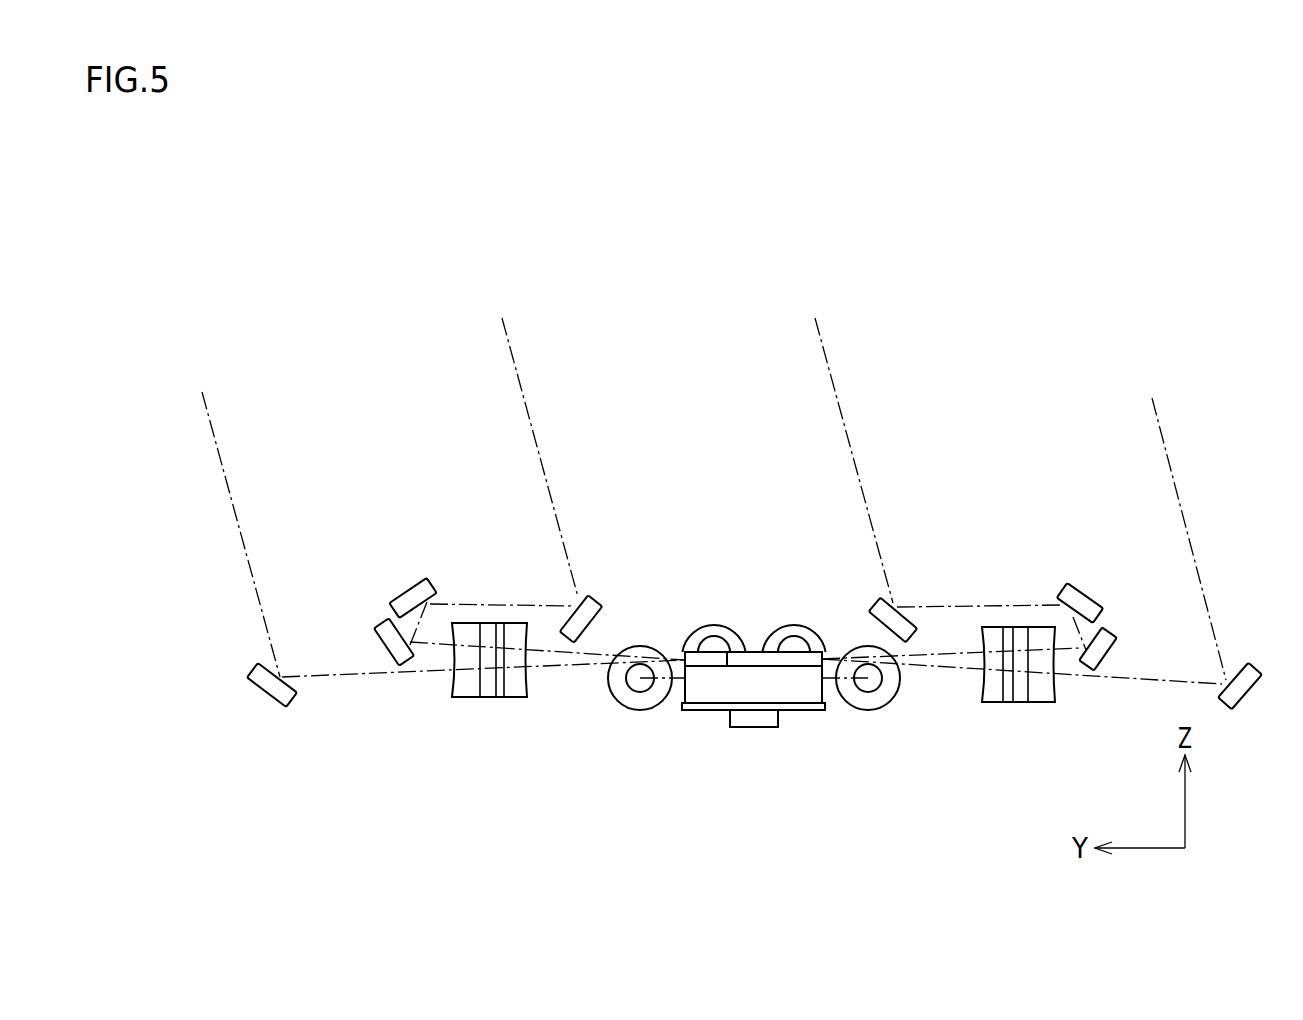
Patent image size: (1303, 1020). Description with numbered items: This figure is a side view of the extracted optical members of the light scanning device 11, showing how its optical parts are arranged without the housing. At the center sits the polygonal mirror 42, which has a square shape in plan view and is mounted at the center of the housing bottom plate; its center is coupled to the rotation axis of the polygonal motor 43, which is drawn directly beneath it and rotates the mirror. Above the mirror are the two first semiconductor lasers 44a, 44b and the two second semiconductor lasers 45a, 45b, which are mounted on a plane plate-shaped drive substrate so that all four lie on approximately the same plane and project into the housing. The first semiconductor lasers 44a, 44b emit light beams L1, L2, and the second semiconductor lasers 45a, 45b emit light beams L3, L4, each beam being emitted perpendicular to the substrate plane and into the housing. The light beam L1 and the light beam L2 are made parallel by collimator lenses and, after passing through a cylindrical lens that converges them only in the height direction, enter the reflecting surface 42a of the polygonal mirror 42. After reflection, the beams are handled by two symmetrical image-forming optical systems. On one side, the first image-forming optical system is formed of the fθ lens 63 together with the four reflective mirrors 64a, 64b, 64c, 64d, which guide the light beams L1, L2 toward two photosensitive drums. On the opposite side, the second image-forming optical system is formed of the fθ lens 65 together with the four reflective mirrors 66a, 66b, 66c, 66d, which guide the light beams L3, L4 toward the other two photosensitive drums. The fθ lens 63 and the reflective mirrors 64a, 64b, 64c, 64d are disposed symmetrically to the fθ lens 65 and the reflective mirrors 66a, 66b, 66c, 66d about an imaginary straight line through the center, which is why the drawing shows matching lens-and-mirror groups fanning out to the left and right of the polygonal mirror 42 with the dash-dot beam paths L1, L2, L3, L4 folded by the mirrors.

The light scanning device 11 is at (669, 300).
The polygonal mirror 42 is at (710, 662).
The reflecting surface 42a is at (755, 655).
The polygonal motor 43 is at (797, 688).
The first semiconductor laser 44a is at (793, 622).
The first semiconductor laser 44b is at (862, 646).
The second semiconductor laser 45a is at (638, 646).
The second semiconductor laser 45b is at (715, 622).
The fθ lens 63 is at (1042, 695).
The reflective mirror 64a is at (1254, 668).
The reflective mirror 64b is at (1113, 653).
The reflective mirror 64c is at (1085, 600).
The reflective mirror 64d is at (907, 624).
The fθ lens 65 is at (516, 697).
The reflective mirror 66a is at (265, 692).
The reflective mirror 66b is at (384, 647).
The reflective mirror 66c is at (405, 596).
The reflective mirror 66d is at (590, 594).
The light beam L1 is at (1172, 474).
The light beam L2 is at (840, 402).
The light beam L3 is at (522, 390).
The light beam L4 is at (223, 468).